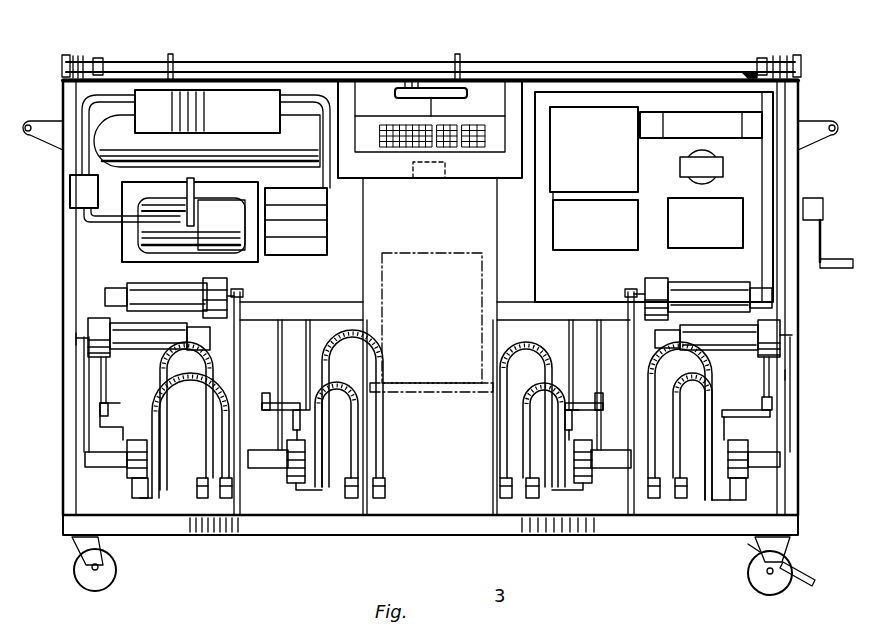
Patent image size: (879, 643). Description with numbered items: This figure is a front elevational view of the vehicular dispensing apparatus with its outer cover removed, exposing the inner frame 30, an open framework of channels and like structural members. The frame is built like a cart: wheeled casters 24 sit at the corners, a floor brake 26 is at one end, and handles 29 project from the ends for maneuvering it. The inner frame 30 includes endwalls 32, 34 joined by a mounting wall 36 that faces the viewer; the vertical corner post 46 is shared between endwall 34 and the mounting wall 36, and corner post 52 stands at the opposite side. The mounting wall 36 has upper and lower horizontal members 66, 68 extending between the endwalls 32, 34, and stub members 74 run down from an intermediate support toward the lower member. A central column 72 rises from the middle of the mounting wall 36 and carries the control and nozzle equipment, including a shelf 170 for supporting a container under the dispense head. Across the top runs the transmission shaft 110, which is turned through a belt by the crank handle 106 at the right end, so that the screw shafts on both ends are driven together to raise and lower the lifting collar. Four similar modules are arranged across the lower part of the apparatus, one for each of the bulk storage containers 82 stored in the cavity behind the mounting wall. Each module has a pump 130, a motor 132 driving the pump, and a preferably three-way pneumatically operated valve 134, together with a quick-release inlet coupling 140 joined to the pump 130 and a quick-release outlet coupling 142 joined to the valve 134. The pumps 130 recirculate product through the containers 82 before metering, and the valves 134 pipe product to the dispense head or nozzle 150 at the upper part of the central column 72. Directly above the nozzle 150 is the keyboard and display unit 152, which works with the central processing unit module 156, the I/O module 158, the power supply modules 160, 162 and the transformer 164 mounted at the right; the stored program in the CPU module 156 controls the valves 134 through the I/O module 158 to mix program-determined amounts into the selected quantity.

The wheeled casters 24 is at (100, 585).
The floor brake 26 is at (808, 587).
The handles 29 is at (29, 140).
The inner frame 30 is at (47, 102).
The endwall 32 is at (810, 375).
The endwall 34 is at (50, 273).
The mounting wall 36 is at (236, 552).
The vertical corner post 46 is at (796, 157).
The vertical corner post 52 is at (70, 177).
The upper horizontal member 66 is at (533, 85).
The lower horizontal member 68 is at (368, 533).
The central column 72 is at (480, 240).
The stub members 74 is at (130, 507).
The bulk storage containers 82 is at (187, 460).
The crank handle 106 is at (842, 268).
The transmission shaft 110 is at (630, 63).
The pump 130 is at (96, 468).
The motor 132 is at (140, 288).
The valve 134 is at (108, 404).
The quick-release inlet coupling 140 is at (223, 498).
The quick-release outlet coupling 142 is at (200, 495).
The dispense head or nozzle 150 is at (423, 182).
The keyboard and display unit 152 is at (402, 88).
The central processing unit module 156 is at (600, 153).
The I/O module 158 is at (601, 238).
The power supply module 160 is at (718, 227).
The power supply module 162 is at (705, 137).
The transformer 164 is at (723, 170).
The shelf 170 is at (447, 400).